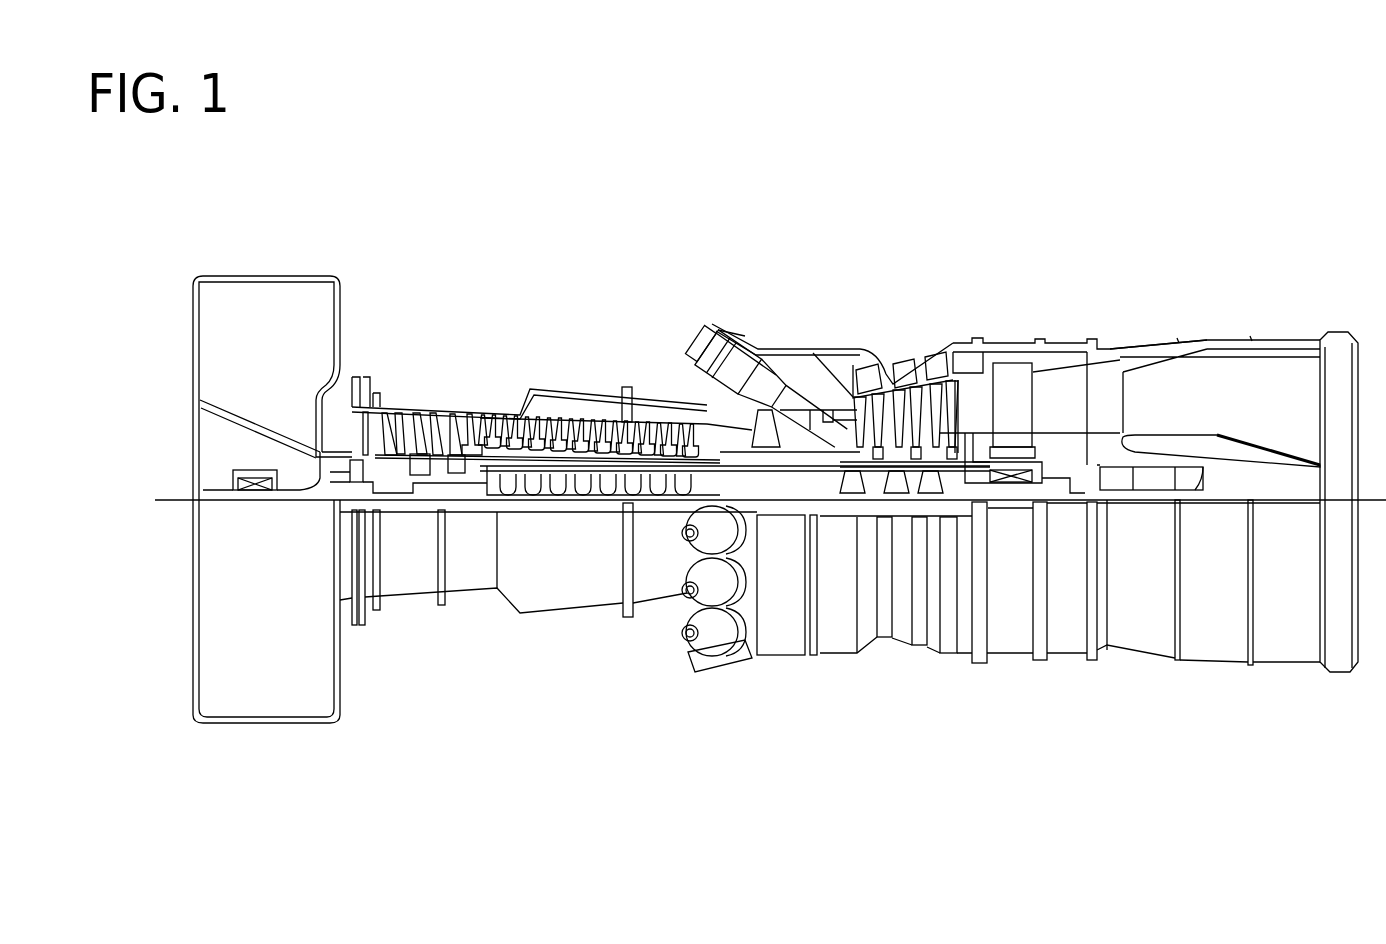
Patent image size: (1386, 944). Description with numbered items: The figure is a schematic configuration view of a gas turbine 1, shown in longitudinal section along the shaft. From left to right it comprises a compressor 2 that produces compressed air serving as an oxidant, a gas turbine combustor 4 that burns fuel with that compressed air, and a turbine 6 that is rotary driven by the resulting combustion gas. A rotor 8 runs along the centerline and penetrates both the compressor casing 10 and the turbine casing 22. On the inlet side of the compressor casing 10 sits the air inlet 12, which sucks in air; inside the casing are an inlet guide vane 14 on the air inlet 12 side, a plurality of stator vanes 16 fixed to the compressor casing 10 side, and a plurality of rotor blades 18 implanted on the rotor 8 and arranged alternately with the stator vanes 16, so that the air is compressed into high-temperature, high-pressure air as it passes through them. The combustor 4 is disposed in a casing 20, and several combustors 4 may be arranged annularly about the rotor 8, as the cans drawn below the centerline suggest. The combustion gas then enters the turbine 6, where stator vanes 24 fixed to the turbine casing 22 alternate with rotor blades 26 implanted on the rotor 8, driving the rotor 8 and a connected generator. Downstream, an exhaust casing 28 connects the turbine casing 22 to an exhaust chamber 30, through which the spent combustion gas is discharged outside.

The gas turbine 1 is at (795, 227).
The compressor 2 is at (433, 340).
The gas turbine combustor 4 is at (713, 313).
The turbine 6 is at (990, 307).
The rotor 8 is at (712, 426).
The compressor casing 10 is at (417, 411).
The air inlet 12 is at (230, 358).
The inlet guide vane 14 is at (375, 432).
The stator vanes 16 is at (432, 410).
The rotor blades 18 is at (397, 410).
The casing 20 is at (694, 360).
The turbine casing 22 is at (918, 352).
The stator vanes 24 is at (865, 390).
The rotor blades 26 is at (827, 373).
The exhaust casing 28 is at (1020, 343).
The exhaust chamber 30 is at (1282, 340).